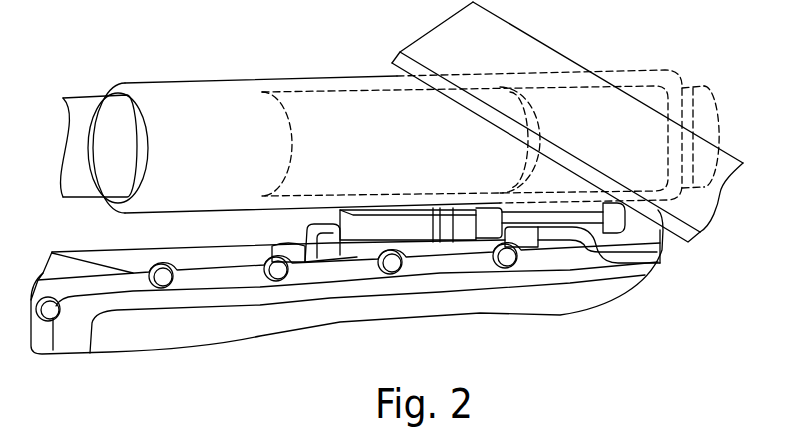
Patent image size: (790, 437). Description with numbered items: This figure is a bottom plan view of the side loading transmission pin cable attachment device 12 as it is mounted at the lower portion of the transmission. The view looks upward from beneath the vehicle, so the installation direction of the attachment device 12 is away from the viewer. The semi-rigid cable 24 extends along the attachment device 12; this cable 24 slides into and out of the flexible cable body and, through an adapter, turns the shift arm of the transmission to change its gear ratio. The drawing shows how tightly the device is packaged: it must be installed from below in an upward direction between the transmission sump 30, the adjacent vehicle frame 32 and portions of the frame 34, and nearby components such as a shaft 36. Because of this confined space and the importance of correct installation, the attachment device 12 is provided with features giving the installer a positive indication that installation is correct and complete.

The side loading transmission pin cable attachment device 12 is at (286, 230).
The semi-rigid cable 24 is at (523, 220).
The transmission sump 30 is at (210, 278).
The vehicle frame 32 is at (508, 41).
The portions of the frame 34 is at (318, 230).
The shaft 36 is at (158, 207).